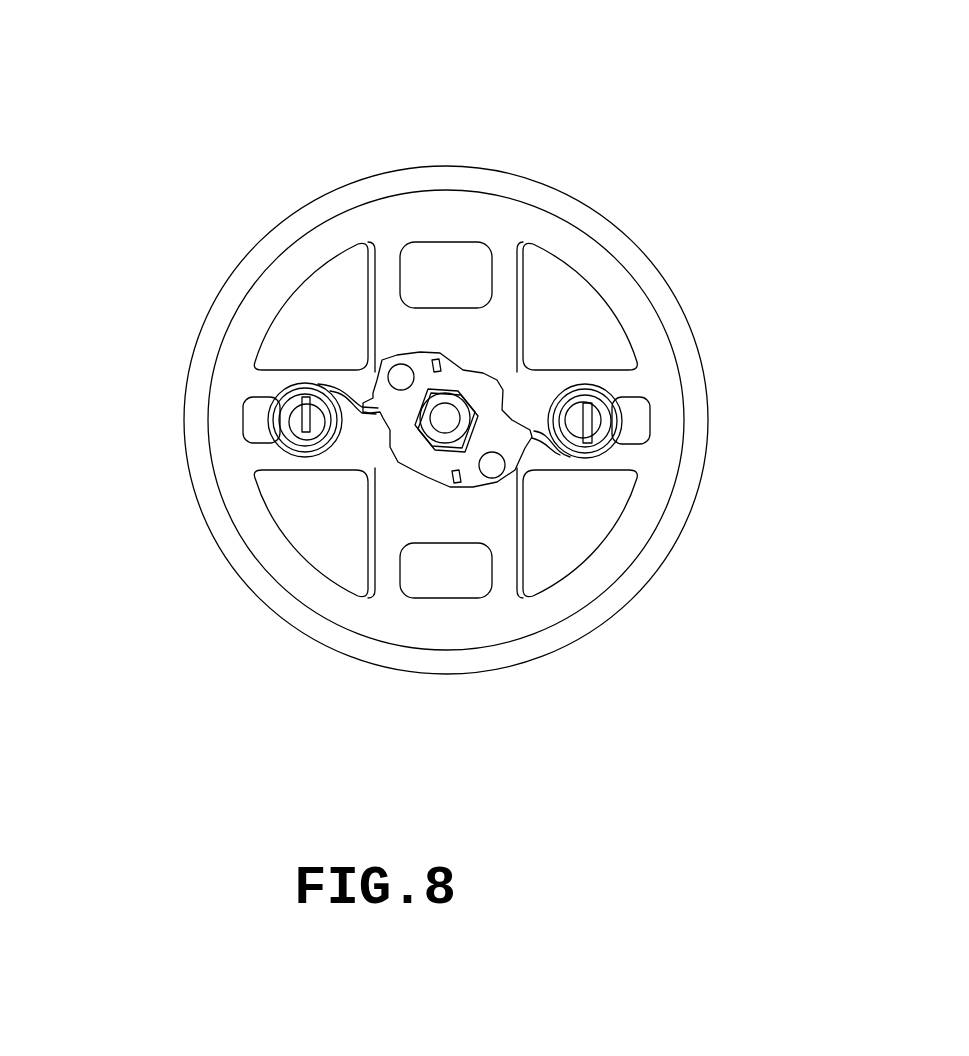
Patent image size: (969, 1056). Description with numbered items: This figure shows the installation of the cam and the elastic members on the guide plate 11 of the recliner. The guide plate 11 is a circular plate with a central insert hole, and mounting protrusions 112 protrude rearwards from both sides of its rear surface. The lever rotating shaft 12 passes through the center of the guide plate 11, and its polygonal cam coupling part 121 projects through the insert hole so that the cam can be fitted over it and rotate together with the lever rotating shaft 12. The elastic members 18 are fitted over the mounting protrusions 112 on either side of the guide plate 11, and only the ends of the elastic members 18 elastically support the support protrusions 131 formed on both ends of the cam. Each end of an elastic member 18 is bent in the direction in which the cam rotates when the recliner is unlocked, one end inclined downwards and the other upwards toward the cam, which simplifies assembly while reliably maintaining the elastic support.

The guide plate 11 is at (453, 167).
The mounting protrusions 112 is at (318, 417).
The lever rotating shaft 12 is at (438, 451).
The cam coupling part 121 is at (455, 393).
The support protrusions 131 is at (372, 392).
The elastic members 18 is at (593, 398).